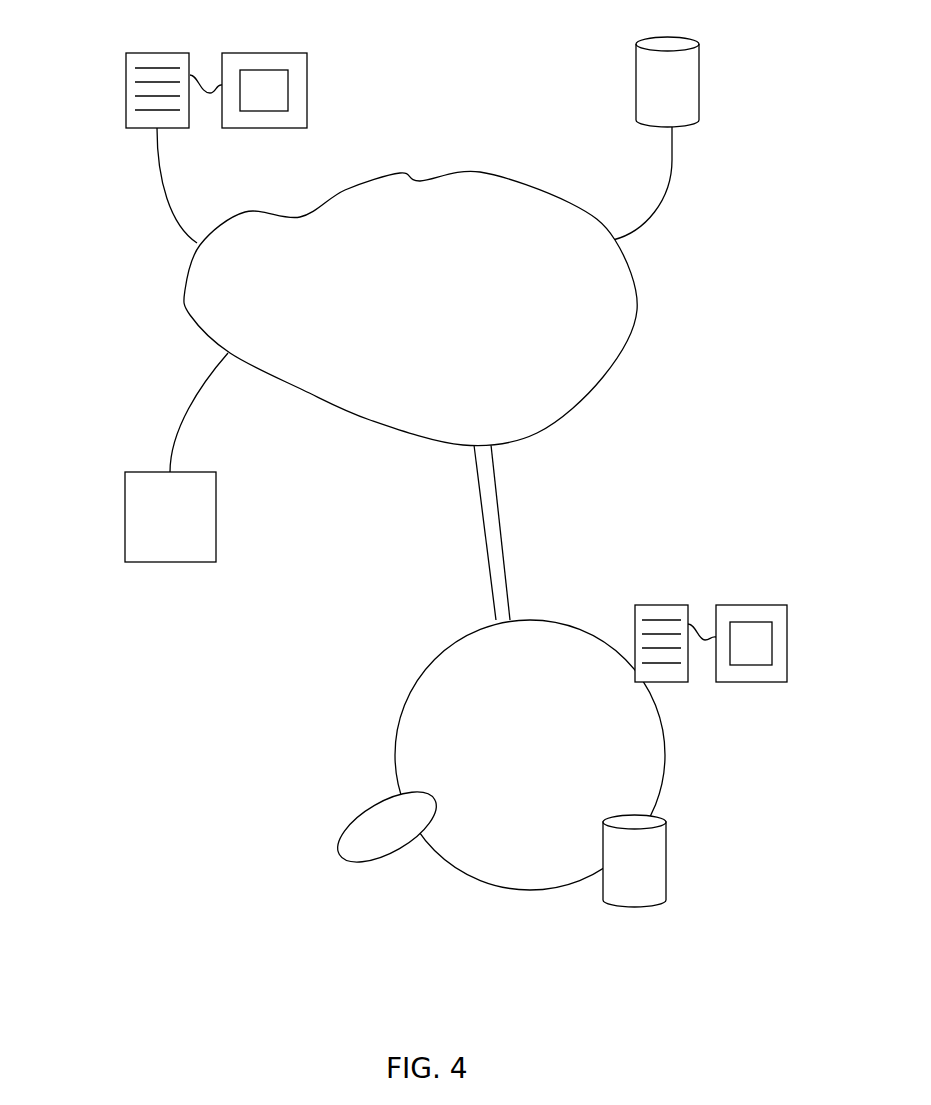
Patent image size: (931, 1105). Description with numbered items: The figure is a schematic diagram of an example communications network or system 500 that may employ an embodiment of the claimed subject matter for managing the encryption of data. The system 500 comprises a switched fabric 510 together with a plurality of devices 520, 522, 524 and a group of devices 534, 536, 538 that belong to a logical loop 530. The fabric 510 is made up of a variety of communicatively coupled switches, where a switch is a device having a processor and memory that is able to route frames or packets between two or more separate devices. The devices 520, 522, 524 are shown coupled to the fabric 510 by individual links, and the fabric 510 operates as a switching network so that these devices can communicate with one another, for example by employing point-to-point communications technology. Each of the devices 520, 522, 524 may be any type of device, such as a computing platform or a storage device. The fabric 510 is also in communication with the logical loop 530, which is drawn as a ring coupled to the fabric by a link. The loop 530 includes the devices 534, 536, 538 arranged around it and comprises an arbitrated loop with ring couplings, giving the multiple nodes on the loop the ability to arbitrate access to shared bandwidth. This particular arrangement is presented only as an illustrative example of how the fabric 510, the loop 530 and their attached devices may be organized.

The communications network or system 500 is at (223, 1016).
The switched fabric 510 is at (410, 308).
The device 520 is at (157, 53).
The device 522 is at (167, 562).
The device 524 is at (699, 86).
The logical loop 530 is at (398, 687).
The device 534 is at (352, 859).
The device 536 is at (632, 906).
The device 538 is at (660, 605).